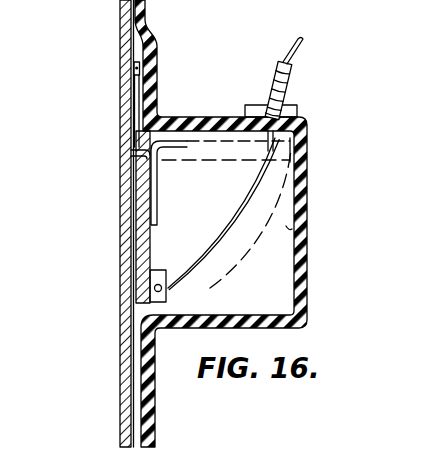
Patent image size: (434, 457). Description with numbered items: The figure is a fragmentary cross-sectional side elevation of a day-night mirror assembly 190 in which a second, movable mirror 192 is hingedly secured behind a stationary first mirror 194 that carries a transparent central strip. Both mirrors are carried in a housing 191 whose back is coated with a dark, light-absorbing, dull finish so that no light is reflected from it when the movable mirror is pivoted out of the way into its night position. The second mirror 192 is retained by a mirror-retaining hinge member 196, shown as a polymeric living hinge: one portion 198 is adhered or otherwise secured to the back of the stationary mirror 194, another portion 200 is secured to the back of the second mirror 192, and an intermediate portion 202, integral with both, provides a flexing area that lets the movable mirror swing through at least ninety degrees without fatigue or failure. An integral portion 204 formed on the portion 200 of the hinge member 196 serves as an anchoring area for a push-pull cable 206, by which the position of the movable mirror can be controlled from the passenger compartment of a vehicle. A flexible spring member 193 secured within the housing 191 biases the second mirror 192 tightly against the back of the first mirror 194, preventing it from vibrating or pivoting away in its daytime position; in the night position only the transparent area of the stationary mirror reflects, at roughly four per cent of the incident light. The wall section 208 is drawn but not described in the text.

The mirror assembly 190 is at (102, 52).
The housing 191 is at (176, 117).
The second mirror 192 is at (120, 218).
The spring member 193 is at (184, 141).
The first mirror 194 is at (118, 361).
The hinge member 196 is at (164, 178).
The hinge portion 198 is at (133, 108).
The hinge portion 200 is at (149, 242).
The intermediate portion 202 is at (130, 152).
The integral portion 204 is at (165, 298).
The push-pull cable 206 is at (235, 217).
The housing side wall 208 is at (292, 229).